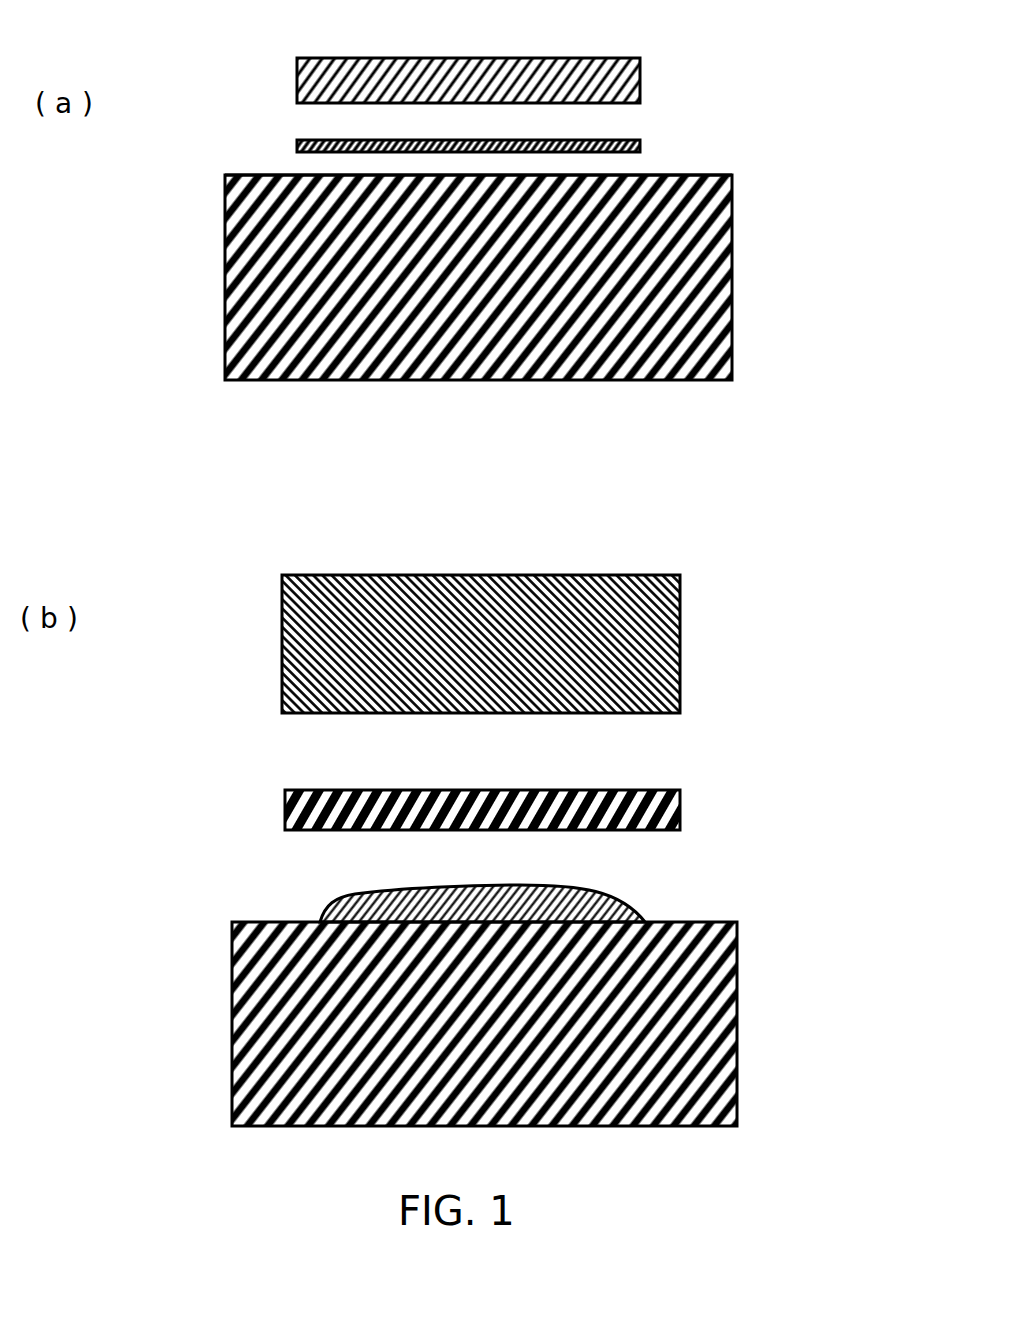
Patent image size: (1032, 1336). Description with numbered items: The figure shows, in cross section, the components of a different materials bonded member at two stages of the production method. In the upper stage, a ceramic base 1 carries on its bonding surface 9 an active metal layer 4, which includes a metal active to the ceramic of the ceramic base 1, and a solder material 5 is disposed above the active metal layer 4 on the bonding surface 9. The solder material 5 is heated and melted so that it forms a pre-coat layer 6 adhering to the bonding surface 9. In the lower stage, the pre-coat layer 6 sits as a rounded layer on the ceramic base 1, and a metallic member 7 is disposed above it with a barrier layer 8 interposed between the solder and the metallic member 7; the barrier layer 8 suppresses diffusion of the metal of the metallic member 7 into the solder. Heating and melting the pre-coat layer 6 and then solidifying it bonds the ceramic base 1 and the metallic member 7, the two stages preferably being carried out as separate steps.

The ceramic base 1 is at (720, 208).
The bonding surface 9 is at (328, 175).
The solder material 5 is at (630, 57).
The active metal layer 4 is at (630, 142).
The metallic member 7 is at (650, 608).
The barrier layer 8 is at (680, 812).
The pre-coat layer 6 is at (627, 905).